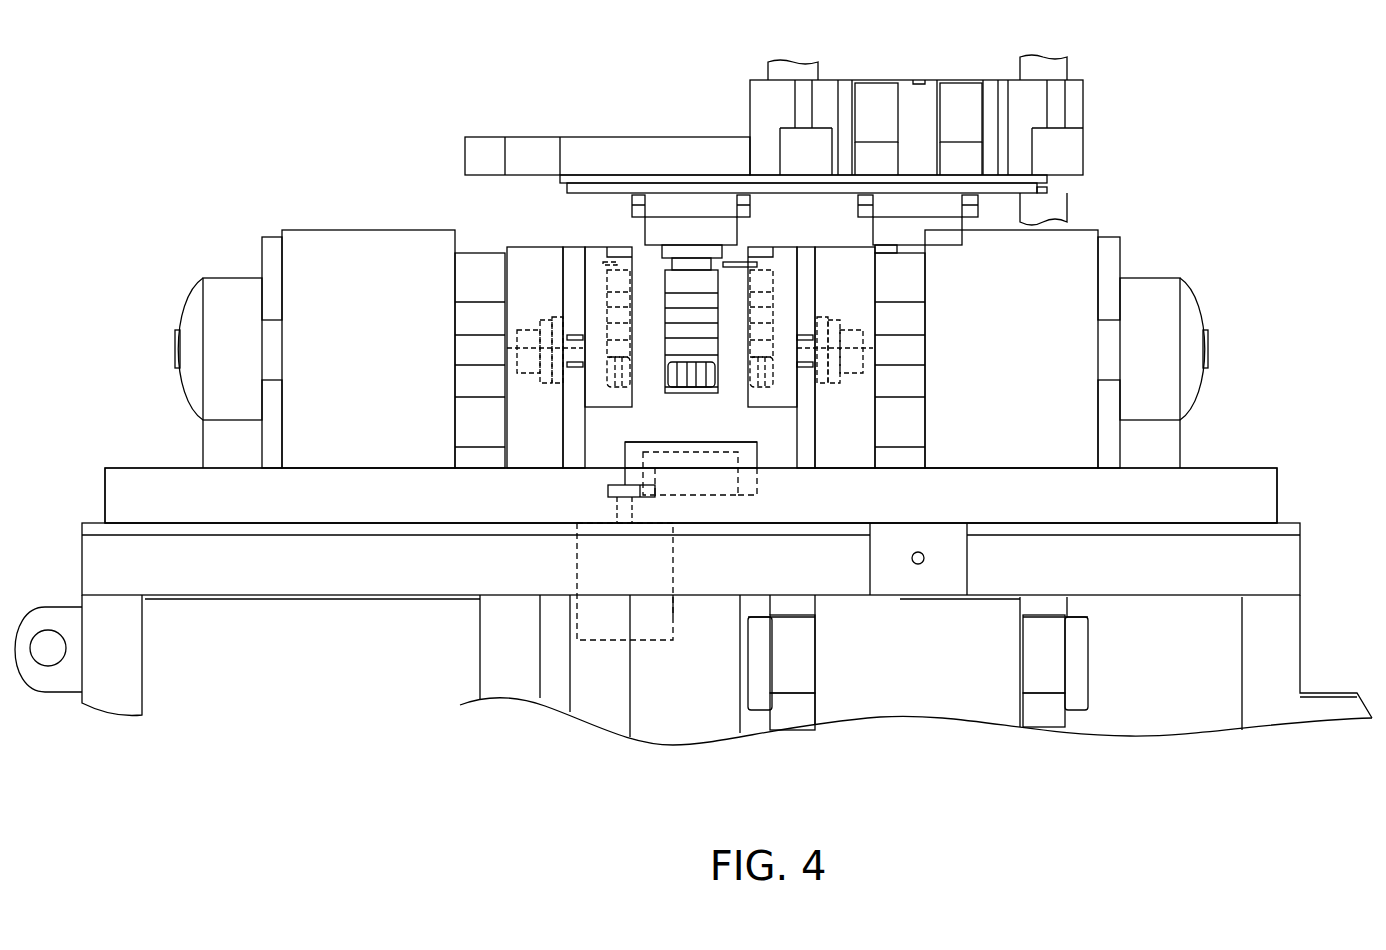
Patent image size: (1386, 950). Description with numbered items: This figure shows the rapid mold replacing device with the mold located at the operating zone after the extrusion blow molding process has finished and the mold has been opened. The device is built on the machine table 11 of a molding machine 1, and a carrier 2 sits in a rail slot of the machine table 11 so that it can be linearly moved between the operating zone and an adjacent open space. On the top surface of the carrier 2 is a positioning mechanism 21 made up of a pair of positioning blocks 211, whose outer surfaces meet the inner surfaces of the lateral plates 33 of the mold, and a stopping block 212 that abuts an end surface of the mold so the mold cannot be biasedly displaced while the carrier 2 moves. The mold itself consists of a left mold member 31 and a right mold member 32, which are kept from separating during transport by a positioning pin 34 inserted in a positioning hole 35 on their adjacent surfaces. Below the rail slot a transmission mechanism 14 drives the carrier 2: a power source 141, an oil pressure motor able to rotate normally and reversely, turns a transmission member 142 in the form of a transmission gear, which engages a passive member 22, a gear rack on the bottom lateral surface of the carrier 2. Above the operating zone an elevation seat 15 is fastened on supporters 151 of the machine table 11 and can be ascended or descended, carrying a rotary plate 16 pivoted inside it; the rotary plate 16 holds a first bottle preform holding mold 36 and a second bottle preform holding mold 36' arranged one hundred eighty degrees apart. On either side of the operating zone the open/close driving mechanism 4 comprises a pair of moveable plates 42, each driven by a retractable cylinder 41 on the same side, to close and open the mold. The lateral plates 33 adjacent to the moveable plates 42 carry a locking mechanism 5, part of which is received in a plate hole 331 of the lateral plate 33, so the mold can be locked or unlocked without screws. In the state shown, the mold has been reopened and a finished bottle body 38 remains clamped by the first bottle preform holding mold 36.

The molding machine 1 is at (1224, 388).
The machine table 11 is at (1253, 487).
The carrier 2 is at (700, 483).
The positioning mechanism 21 is at (637, 453).
The positioning blocks 211 is at (705, 452).
The stopping block 212 is at (643, 445).
The passive member 22 is at (645, 497).
The transmission mechanism 14 is at (673, 617).
The power source 141 is at (577, 565).
The transmission member 142 is at (610, 487).
The open/close driving mechanism 4 is at (305, 218).
The retractable cylinder 41 is at (390, 335).
The moveable plates 42 is at (538, 258).
The locking mechanism 5 is at (507, 350).
The elevation seat 15 is at (604, 148).
The supporters 151 is at (1055, 208).
The rotary plate 16 is at (1043, 190).
The left mold member 31 is at (783, 260).
The right mold member 32 is at (595, 258).
The lateral plates 33 is at (575, 258).
The plate hole 331 is at (807, 330).
The positioning pin 34 is at (740, 267).
The positioning hole 35 is at (613, 263).
The first bottle preform holding mold 36 is at (700, 212).
The second bottle preform holding mold 36' is at (932, 136).
The bottle body 38 is at (680, 233).